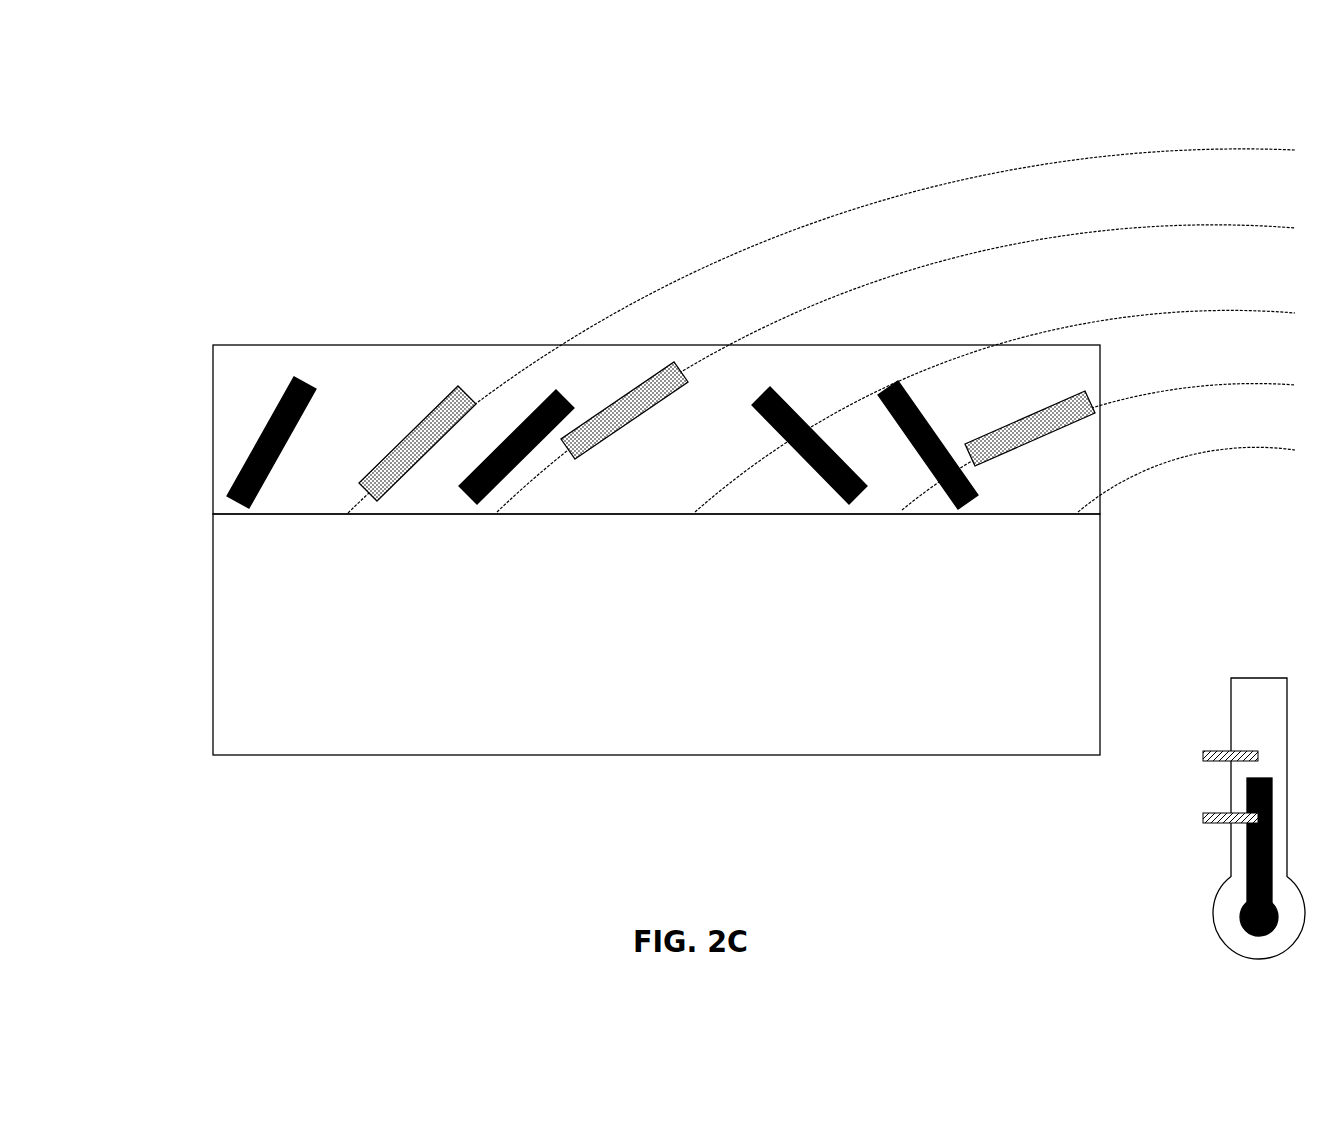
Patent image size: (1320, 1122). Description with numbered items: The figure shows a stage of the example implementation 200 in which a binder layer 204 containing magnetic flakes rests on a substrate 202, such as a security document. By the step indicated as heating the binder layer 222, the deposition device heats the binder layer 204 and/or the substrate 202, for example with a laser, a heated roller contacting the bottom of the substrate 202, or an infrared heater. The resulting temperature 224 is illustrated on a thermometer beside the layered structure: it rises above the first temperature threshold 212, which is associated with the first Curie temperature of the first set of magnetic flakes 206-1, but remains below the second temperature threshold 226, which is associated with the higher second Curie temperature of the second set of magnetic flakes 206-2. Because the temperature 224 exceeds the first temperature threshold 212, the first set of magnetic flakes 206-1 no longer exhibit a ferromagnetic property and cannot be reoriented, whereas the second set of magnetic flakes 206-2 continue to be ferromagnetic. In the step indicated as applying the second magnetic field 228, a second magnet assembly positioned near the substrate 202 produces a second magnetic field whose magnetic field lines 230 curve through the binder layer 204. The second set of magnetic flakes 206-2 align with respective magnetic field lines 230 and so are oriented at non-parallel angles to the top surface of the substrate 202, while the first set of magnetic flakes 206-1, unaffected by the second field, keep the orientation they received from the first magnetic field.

The implementation 200 is at (598, 399).
The substrate 202 is at (677, 659).
The binder layer 204 is at (250, 380).
The first set of magnetic flakes 206-1 is at (945, 503).
The second set of magnetic flakes 206-2 is at (727, 295).
The first temperature threshold 212 is at (1200, 818).
The heating of the binder layer 222 is at (478, 796).
The temperature 224 is at (1240, 888).
The second temperature threshold 226 is at (1200, 755).
The application of the second magnetic field 228 is at (478, 859).
The magnetic field lines 230 is at (1175, 316).